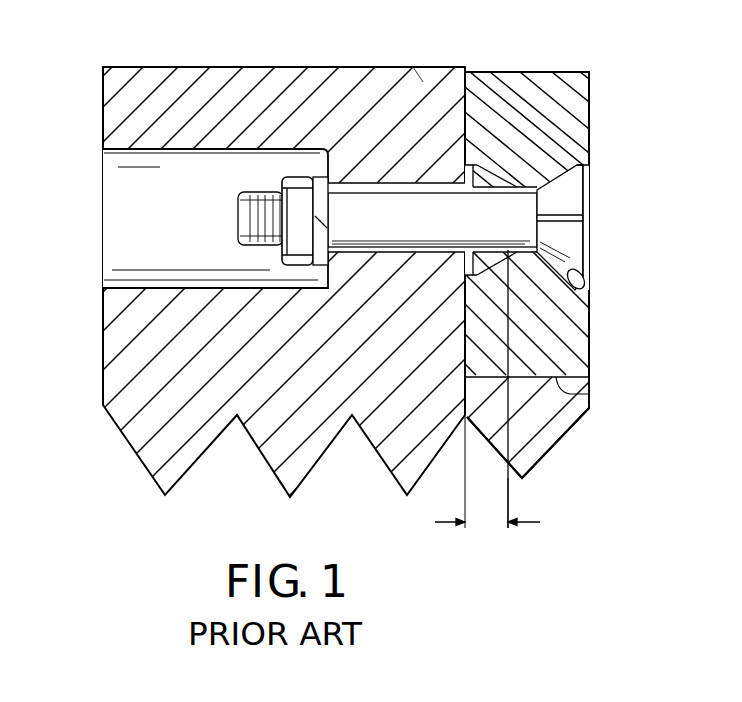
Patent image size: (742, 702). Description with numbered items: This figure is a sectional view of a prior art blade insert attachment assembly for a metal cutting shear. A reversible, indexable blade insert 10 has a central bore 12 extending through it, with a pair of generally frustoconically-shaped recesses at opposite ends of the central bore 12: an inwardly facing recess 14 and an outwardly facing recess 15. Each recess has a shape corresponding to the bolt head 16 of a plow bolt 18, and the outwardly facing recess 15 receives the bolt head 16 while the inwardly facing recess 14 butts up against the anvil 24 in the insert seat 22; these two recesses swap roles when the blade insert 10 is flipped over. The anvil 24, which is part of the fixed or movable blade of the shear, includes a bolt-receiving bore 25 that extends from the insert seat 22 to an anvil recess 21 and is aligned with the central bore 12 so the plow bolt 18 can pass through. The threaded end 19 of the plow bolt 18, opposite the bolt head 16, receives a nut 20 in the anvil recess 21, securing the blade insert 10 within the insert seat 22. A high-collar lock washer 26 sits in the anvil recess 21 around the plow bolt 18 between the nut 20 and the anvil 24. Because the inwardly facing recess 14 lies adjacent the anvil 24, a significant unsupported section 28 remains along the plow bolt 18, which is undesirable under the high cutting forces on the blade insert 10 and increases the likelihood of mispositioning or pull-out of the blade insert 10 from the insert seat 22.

The blade insert 10 is at (510, 80).
The central bore 12 is at (527, 185).
The inwardly facing recess 14 is at (492, 258).
The outwardly facing recess 15 is at (589, 298).
The bolt head 16 is at (577, 198).
The plow bolt 18 is at (435, 230).
The threaded end 19 is at (248, 207).
The nut 20 is at (298, 183).
The anvil recess 21 is at (165, 255).
The insert seat 22 is at (589, 394).
The anvil 24 is at (423, 82).
The bolt-receiving bore 25 is at (367, 190).
The high-collar lock washer 26 is at (322, 193).
The unsupported section 28 is at (540, 522).